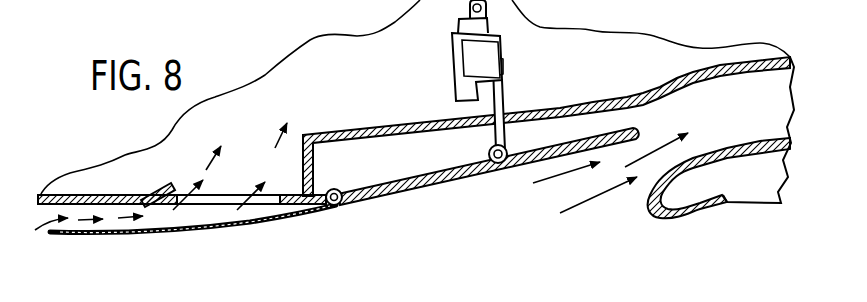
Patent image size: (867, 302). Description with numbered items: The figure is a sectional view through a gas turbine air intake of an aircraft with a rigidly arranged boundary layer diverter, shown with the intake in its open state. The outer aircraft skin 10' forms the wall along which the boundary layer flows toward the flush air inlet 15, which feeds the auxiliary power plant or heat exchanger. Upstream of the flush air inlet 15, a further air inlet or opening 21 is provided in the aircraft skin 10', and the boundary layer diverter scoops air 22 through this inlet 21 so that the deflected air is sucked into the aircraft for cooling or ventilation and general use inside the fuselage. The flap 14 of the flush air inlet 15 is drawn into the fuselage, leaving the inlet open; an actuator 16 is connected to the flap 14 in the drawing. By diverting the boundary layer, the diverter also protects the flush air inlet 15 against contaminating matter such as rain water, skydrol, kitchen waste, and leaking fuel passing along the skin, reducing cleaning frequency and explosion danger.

The aircraft skin 10' is at (182, 158).
The air inlet or opening 21 is at (203, 175).
The air 22 is at (205, 200).
The flap 14 is at (426, 187).
The actuator 16 is at (489, 56).
The flush air inlet 15 is at (744, 123).